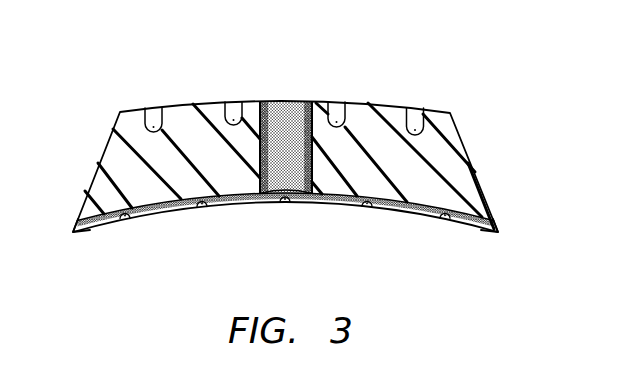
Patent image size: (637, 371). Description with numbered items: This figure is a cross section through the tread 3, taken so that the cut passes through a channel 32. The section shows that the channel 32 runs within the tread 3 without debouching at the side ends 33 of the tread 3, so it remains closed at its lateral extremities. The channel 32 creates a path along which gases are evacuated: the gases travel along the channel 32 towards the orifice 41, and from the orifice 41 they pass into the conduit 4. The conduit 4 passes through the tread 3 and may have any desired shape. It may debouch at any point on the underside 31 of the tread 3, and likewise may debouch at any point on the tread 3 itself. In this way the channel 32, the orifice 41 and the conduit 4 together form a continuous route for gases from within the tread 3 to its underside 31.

The tread 3 is at (443, 127).
The conduit 4 is at (288, 117).
The underside of the tread 31 is at (193, 206).
The channel 32 is at (278, 201).
The side ends of the tread 33 is at (78, 233).
The orifice 41 is at (310, 197).